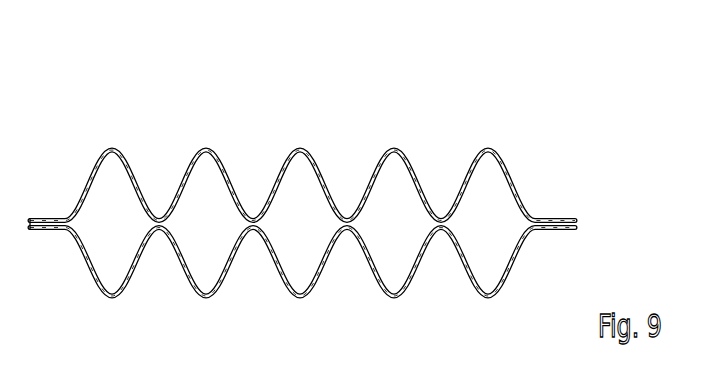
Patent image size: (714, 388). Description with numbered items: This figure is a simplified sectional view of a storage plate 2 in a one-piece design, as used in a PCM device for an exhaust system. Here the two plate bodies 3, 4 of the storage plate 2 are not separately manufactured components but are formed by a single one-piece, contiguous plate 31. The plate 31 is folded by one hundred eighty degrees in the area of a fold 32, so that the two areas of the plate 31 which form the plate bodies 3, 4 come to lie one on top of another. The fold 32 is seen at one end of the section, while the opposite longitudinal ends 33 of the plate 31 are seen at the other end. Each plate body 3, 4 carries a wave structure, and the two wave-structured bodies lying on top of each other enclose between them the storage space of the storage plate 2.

The storage plate 2 is at (312, 193).
The plate body 3 is at (299, 144).
The plate body 4 is at (298, 302).
The plate 31 is at (402, 137).
The fold 32 is at (553, 214).
The longitudinal end 33 is at (38, 213).